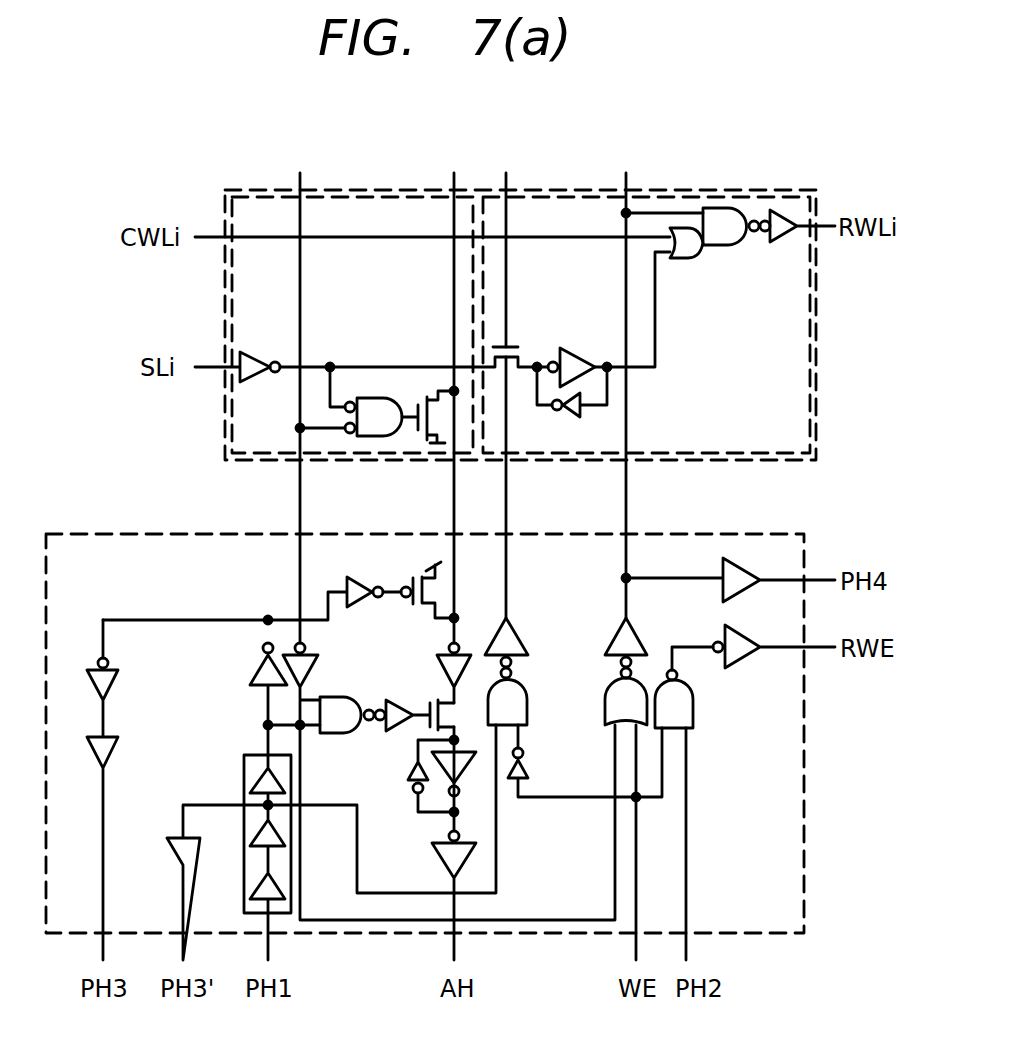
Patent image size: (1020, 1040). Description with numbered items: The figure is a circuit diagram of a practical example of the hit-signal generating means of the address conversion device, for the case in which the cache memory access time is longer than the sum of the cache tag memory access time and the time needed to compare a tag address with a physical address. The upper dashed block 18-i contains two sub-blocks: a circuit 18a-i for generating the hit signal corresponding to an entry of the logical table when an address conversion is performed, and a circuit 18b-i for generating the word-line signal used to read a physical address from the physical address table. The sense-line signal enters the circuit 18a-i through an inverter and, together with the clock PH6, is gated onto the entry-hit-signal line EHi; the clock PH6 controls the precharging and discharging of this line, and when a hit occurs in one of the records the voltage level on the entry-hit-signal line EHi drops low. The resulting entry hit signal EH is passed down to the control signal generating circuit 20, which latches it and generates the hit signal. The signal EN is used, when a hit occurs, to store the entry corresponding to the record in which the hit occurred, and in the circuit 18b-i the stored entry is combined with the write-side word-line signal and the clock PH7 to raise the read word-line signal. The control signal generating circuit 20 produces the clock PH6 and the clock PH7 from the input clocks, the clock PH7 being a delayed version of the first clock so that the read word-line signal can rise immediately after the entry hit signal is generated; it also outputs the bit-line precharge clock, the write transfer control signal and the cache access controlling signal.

The word line driver unit 18-i is at (816, 192).
The circuit for generating a hit signal 18a-i is at (397, 195).
The circuit for generating a word-line signal 18b-i is at (757, 195).
The control signal generating circuit 20 is at (790, 533).
The entry-hit-signal line EHi is at (389, 366).
The clock PH6 is at (300, 500).
The entry hit signal EH is at (458, 514).
The signal EN is at (508, 508).
The clock PH7 is at (630, 508).